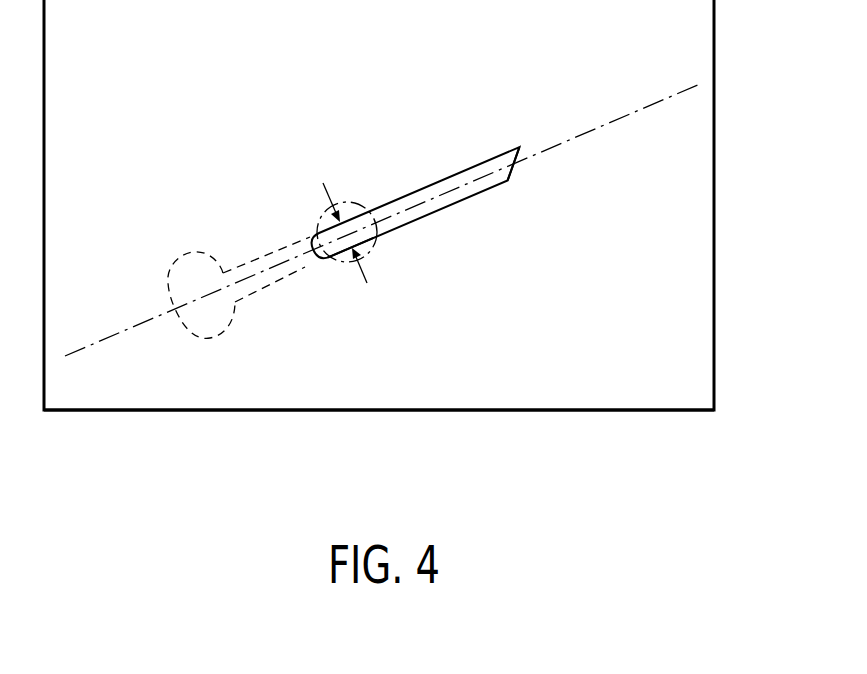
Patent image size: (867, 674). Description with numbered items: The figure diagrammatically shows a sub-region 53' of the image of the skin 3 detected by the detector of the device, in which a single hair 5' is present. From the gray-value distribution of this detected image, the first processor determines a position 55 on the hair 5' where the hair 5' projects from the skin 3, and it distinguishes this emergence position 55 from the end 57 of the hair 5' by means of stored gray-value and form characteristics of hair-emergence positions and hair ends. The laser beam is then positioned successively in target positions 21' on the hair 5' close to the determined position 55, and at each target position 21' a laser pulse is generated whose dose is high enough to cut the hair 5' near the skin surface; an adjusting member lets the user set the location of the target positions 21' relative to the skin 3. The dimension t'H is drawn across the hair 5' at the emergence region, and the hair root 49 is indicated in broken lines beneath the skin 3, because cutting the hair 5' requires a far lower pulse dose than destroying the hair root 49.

The skin 3 is at (412, 363).
The sub-region of the image 53' is at (418, 205).
The hair root 49 is at (170, 287).
The hair 5' is at (419, 188).
The end of the hair 57 is at (510, 173).
The position on the hair 55 is at (323, 238).
The shaft thickness t'H is at (344, 222).
The target position of the laser beam 21' is at (350, 285).